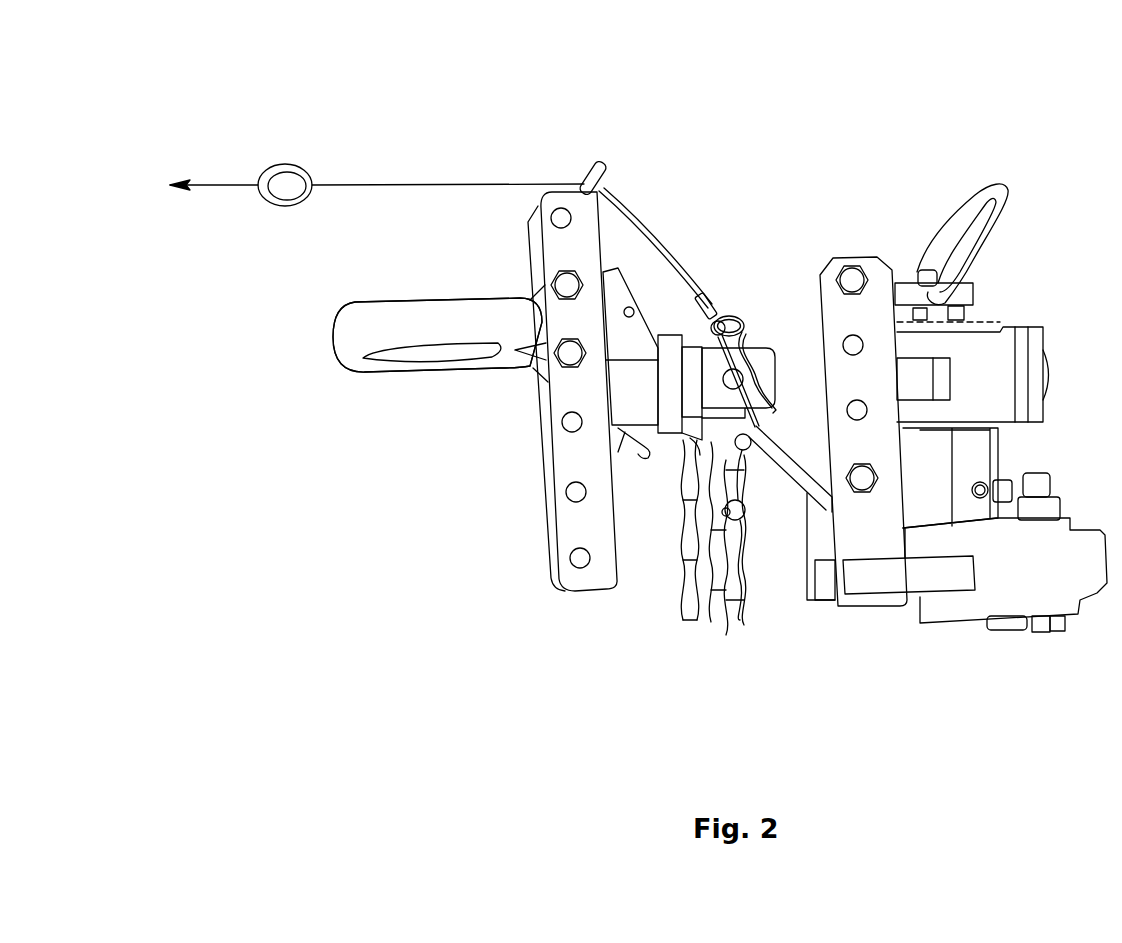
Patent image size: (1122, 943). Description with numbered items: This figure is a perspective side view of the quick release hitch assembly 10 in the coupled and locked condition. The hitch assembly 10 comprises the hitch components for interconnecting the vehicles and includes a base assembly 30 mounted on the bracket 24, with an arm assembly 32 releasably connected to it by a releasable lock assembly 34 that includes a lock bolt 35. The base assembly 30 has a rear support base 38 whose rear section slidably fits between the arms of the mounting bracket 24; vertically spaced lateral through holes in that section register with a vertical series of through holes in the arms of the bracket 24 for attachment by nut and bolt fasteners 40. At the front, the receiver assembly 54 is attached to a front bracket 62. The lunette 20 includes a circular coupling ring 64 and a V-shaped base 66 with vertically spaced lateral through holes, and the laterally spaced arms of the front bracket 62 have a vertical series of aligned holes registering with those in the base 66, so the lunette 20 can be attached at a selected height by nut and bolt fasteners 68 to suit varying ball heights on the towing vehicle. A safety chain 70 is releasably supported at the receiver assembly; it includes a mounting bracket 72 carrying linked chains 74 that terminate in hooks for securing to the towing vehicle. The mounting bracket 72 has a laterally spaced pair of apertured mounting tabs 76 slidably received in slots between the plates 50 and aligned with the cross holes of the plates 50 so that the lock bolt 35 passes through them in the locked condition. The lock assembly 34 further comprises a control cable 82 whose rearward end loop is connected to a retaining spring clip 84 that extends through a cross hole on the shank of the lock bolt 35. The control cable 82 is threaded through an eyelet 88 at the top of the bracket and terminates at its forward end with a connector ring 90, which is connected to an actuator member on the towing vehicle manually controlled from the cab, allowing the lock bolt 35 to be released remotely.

The hitch assembly 10 is at (720, 107).
The lunette 20 is at (348, 350).
The bracket 24 is at (870, 537).
The base assembly 30 is at (798, 275).
The arm assembly 32 is at (537, 505).
The lock assembly 34 is at (732, 278).
The lock bolt 35 is at (722, 376).
The support base 38 is at (783, 447).
The nut and bolt fasteners 40 is at (850, 278).
The plates 50 is at (768, 378).
The receiver assembly 54 is at (618, 398).
The front bracket 62 is at (550, 563).
The coupling ring 64 is at (355, 323).
The base 66 is at (530, 355).
The nut and bolt fasteners 68 is at (558, 278).
The safety chain 70 is at (678, 633).
The mounting bracket 72 is at (695, 425).
The linked chains 74 is at (725, 610).
The mounting tabs 76 is at (755, 425).
The control cable 82 is at (398, 184).
The retaining spring clip 84 is at (743, 320).
The eyelet 88 is at (595, 160).
The connector ring 90 is at (272, 165).